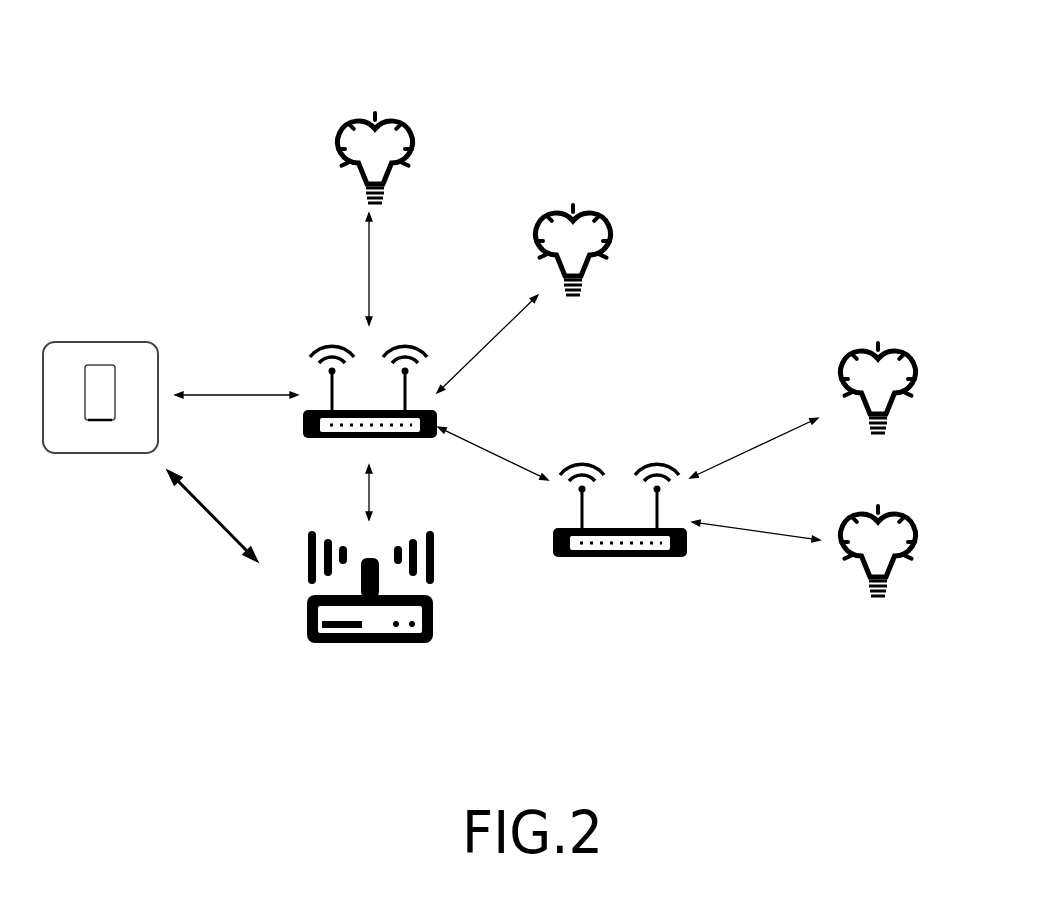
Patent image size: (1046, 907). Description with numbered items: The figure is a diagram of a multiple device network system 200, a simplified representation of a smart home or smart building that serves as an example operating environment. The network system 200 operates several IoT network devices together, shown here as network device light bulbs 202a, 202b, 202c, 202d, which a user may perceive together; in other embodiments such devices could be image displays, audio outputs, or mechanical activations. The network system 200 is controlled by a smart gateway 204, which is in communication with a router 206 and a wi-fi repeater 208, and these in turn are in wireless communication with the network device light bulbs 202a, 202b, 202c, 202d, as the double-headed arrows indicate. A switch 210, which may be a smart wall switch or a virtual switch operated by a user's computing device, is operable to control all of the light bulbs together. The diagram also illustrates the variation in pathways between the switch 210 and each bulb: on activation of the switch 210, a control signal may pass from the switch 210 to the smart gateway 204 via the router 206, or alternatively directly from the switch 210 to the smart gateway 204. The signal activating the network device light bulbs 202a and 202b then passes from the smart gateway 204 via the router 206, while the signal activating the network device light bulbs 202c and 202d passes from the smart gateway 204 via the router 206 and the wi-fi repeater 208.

The multiple device network system 200 is at (486, 68).
The network device light bulb 202a is at (410, 150).
The network device light bulb 202b is at (605, 233).
The network device light bulb 202c is at (858, 355).
The network device light bulb 202d is at (878, 513).
The smart gateway 204 is at (433, 620).
The router 206 is at (300, 420).
The wi-fi repeater 208 is at (688, 540).
The switch 210 is at (103, 355).